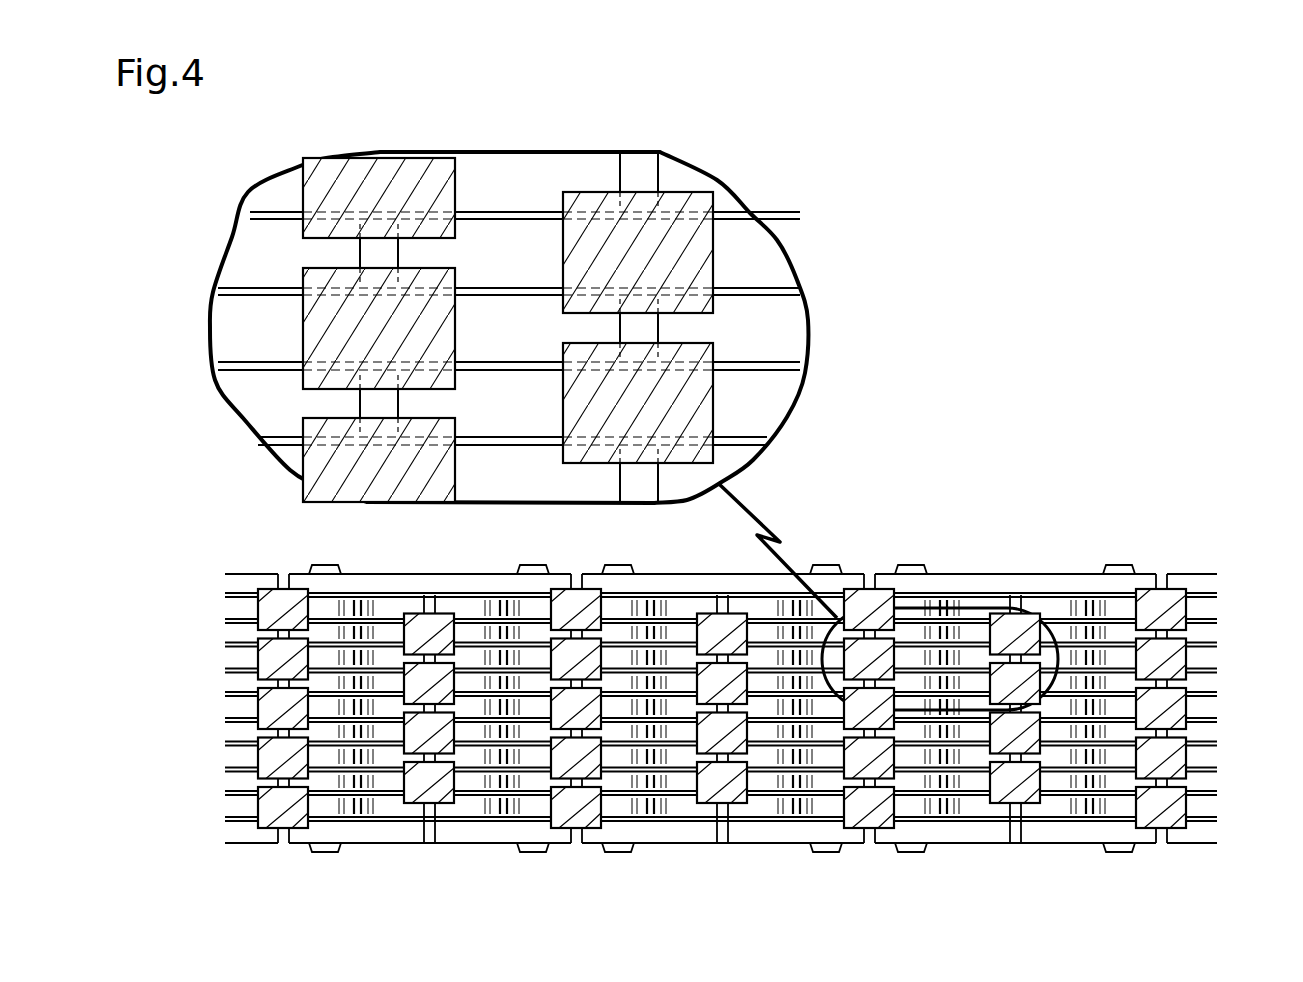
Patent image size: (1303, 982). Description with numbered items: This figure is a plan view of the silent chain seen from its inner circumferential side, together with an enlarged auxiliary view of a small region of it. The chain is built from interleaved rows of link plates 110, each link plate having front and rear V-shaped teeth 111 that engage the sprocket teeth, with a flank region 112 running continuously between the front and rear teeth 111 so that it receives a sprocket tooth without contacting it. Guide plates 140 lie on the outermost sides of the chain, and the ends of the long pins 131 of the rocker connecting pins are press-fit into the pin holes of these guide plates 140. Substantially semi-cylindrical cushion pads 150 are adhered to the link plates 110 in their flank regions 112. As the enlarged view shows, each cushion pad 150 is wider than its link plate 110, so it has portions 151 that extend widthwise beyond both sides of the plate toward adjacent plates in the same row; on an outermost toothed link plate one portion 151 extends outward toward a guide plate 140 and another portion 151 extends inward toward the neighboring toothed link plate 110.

The link plate 110 is at (530, 178).
The V-shaped tooth 111 is at (483, 808).
The flank region 112 is at (898, 812).
The long pin 131 is at (330, 853).
The guide plate 140 is at (378, 586).
The cushion pad 150 is at (378, 178).
The portion 151 is at (350, 378).